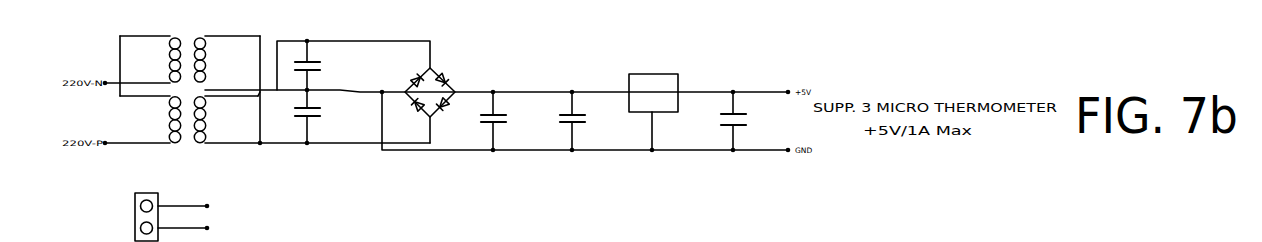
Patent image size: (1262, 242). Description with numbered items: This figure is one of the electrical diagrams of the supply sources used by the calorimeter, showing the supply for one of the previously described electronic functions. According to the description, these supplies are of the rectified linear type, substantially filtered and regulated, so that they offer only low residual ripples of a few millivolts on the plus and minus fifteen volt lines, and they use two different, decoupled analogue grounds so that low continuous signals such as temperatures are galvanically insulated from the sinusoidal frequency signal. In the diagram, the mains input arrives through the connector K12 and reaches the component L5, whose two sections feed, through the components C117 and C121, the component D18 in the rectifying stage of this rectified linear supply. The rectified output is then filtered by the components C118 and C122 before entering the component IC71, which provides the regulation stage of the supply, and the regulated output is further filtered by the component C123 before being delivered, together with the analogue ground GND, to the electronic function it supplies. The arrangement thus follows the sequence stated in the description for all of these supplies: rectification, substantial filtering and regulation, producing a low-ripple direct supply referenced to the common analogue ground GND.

The transformer U130_10VA_2X9V L5 is at (454, 81).
The capacitor 47nF/250V C117 is at (335, 65).
The capacitor 47nF/250V C121 is at (335, 116).
The bridge rectifier RS204L D18 is at (438, 97).
The capacitor 47000uF-16V C118 is at (526, 121).
The capacitor 330nF C122 is at (584, 121).
The voltage regulator 7805D IC71 is at (653, 104).
The capacitor 100nF C123 is at (743, 121).
The connector BORNIER-COSSES220 K12 is at (193, 208).